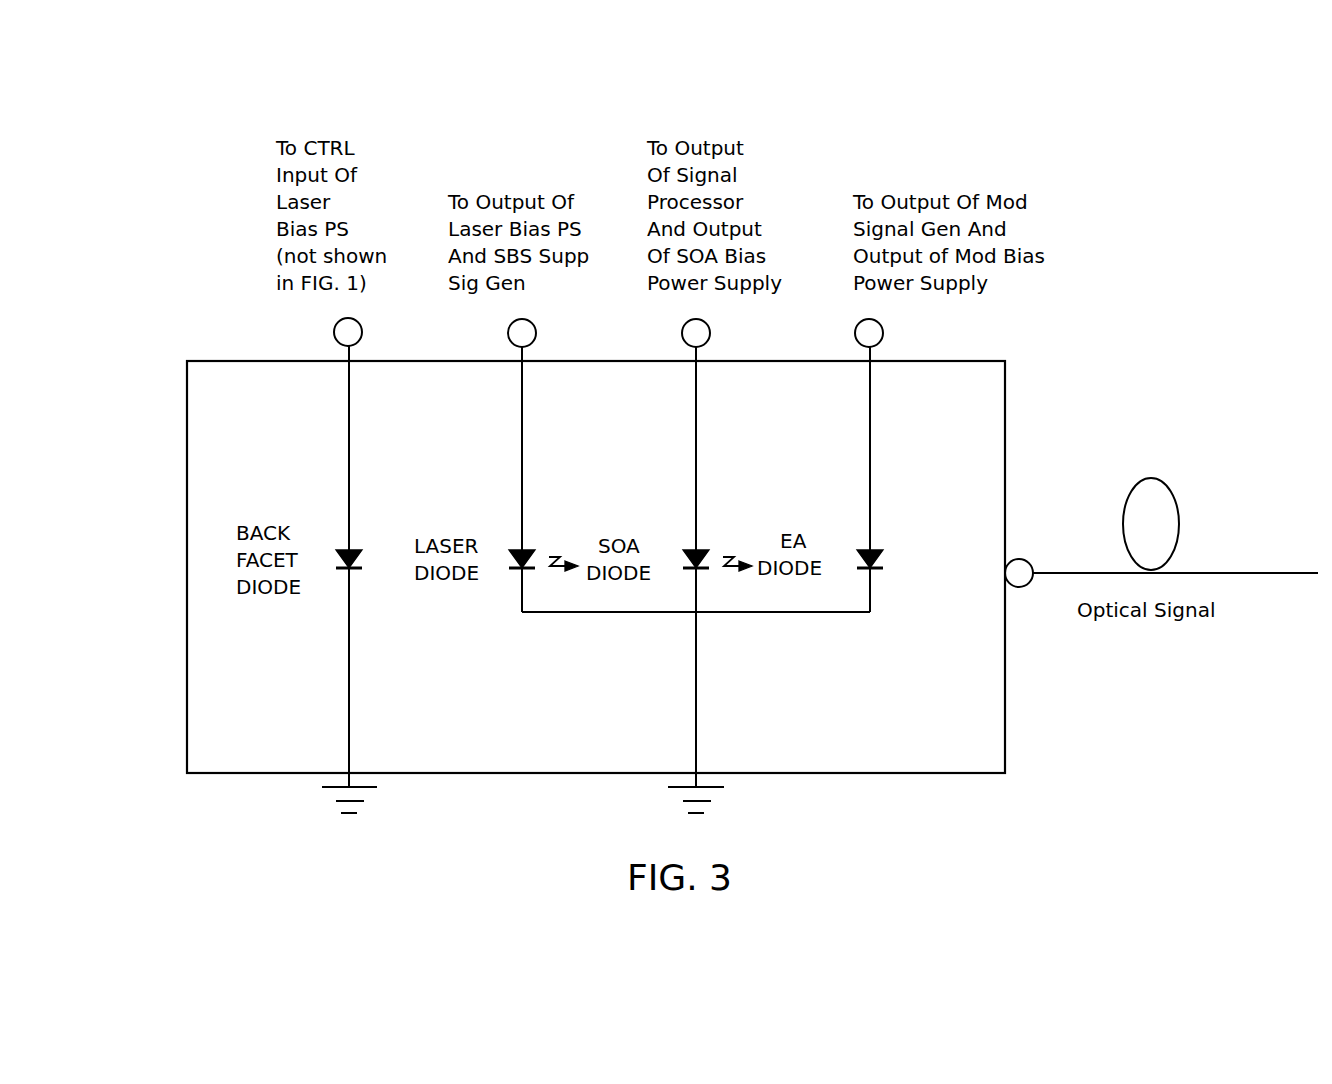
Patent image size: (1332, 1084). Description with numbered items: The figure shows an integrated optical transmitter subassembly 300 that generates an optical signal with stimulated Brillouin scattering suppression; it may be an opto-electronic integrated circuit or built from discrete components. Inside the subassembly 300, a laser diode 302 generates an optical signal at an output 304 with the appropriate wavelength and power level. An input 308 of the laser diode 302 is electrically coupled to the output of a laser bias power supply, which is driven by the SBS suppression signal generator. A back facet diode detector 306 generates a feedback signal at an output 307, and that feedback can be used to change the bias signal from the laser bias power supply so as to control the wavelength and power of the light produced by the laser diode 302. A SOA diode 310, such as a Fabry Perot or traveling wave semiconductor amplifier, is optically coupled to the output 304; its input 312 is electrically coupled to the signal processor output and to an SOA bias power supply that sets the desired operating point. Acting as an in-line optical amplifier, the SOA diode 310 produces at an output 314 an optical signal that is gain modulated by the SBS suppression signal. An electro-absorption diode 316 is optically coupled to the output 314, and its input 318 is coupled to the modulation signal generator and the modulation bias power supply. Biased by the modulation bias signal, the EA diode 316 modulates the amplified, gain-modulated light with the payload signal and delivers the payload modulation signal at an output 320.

The integrated optical transmitter subassembly 300 is at (866, 116).
The laser diode 302 is at (513, 577).
The output of the laser diode 304 is at (556, 553).
The back facet diode detector 306 is at (340, 577).
The output of the back facet diode detector 307 is at (362, 330).
The input of the laser diode 308 is at (536, 330).
The SOA diode 310 is at (692, 574).
The input of the SOA diode 312 is at (709, 330).
The output of the SOA diode 314 is at (730, 553).
The electro-absorption (EA) diode 316 is at (866, 574).
The input of the EA diode 318 is at (882, 330).
The output of the EA diode 320 is at (1027, 563).